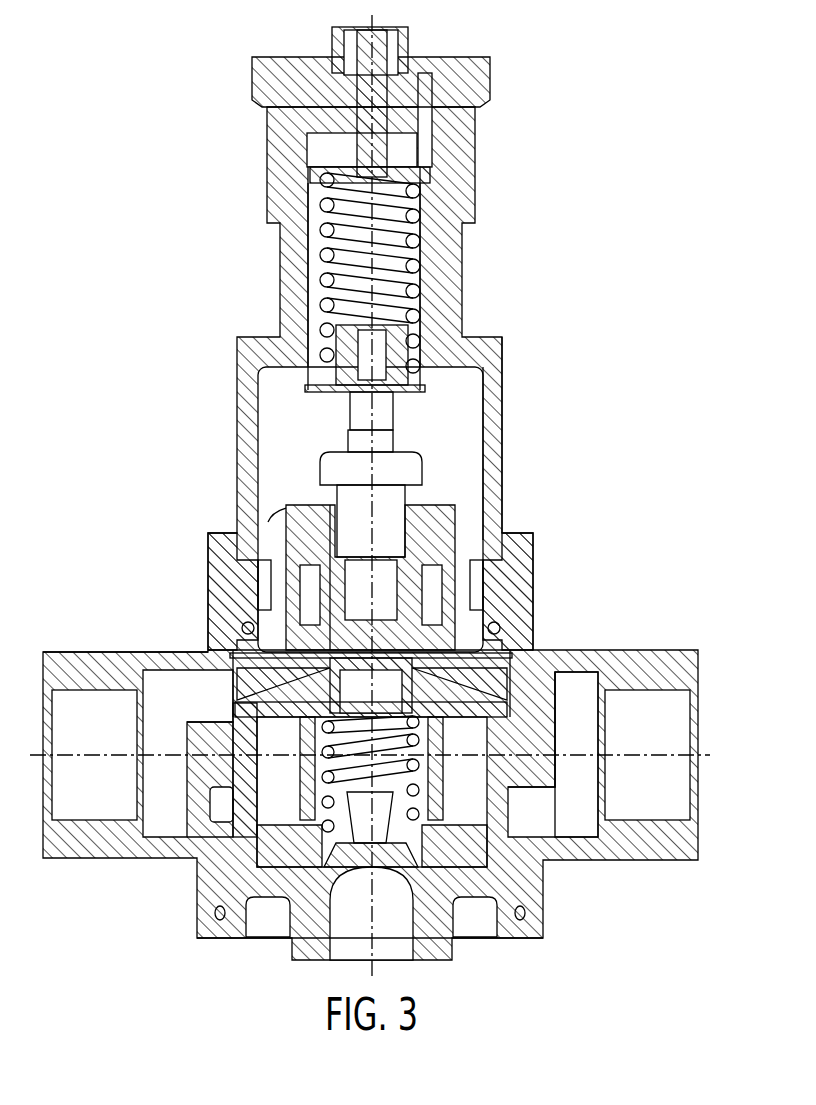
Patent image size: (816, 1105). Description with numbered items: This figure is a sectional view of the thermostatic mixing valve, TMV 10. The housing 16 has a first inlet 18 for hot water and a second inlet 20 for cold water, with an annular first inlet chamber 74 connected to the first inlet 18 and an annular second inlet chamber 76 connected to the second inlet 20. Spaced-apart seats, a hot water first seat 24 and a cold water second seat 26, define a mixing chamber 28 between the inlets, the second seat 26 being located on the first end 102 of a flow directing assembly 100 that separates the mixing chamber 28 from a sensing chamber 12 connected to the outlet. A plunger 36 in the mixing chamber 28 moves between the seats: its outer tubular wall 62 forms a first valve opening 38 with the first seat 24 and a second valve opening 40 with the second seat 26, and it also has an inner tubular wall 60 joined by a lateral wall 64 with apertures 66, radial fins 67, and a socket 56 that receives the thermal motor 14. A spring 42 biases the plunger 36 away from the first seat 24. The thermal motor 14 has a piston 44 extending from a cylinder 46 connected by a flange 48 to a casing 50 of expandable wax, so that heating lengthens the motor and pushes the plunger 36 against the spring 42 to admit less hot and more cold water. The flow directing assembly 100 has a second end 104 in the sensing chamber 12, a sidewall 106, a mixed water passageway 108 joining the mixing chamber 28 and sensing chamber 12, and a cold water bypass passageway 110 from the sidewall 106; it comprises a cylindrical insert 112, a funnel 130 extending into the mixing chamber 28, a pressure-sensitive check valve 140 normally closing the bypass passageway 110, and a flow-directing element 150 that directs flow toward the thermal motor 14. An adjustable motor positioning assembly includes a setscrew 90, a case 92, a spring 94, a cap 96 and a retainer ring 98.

The TMV 10 is at (650, 172).
The sensing chamber 12 is at (474, 432).
The thermal motor 14 is at (346, 432).
The housing 16 is at (508, 460).
The first inlet 18 is at (684, 797).
The second inlet 20 is at (62, 802).
The first seat 24 is at (508, 826).
The second seat 26 is at (545, 712).
The mixing chamber 28 is at (272, 902).
The plunger 36 is at (226, 705).
The first valve opening 38 is at (212, 833).
The second valve opening 40 is at (520, 730).
The spring 42 is at (440, 885).
The piston 44 is at (376, 343).
The cylinder 46 is at (380, 437).
The flange 48 is at (410, 465).
The casing 50 is at (396, 499).
The socket 56 is at (406, 529).
The inner tubular wall 60 is at (426, 807).
The outer tubular wall 62 is at (283, 804).
The lateral wall 64 is at (296, 718).
The apertures 66 is at (455, 718).
The radial fins 67 is at (504, 880).
The first inlet chamber 74 is at (586, 782).
The second inlet chamber 76 is at (148, 660).
The setscrew 90 is at (392, 54).
The case 92 is at (432, 258).
The spring 94 is at (424, 290).
The cap 96 is at (398, 353).
The retainer ring 98 is at (426, 381).
The flow directing assembly 100 is at (508, 612).
The first end 102 is at (540, 664).
The second end 104 is at (488, 545).
The sidewall 106 is at (498, 568).
The mixed water passageway 108 is at (300, 560).
The cold water bypass passageway 110 is at (240, 648).
The cylindrical insert 112 is at (245, 585).
The funnel 130 is at (520, 650).
The check valve 140 is at (250, 618).
The flow-directing element 150 is at (268, 526).